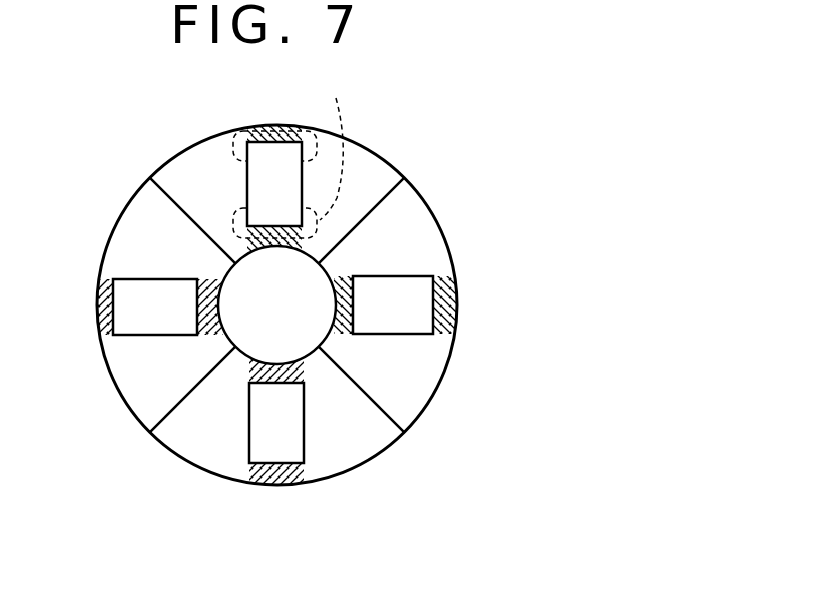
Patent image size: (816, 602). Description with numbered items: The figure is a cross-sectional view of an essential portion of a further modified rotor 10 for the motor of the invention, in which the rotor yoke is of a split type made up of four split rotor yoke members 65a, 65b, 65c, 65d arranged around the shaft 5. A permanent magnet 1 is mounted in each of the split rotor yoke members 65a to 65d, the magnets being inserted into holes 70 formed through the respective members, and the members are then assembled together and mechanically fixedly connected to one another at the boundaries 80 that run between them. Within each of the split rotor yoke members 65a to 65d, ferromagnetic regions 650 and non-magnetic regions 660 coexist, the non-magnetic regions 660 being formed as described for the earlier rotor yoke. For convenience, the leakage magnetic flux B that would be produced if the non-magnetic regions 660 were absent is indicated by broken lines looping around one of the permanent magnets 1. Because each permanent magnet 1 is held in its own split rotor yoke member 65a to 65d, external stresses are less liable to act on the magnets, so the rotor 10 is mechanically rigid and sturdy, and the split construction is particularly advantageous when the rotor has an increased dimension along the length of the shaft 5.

The rotor 10 is at (295, 303).
The permanent magnet 1 is at (423, 290).
The shaft 5 is at (237, 348).
The hole 70 is at (243, 449).
The boundary 80 is at (172, 188).
The ferromagnetic region 650 is at (428, 378).
The non-magnetic region 660 is at (444, 300).
The split rotor yoke member 65a is at (415, 230).
The split rotor yoke member 65b is at (353, 440).
The split rotor yoke member 65c is at (131, 392).
The split rotor yoke member 65d is at (208, 158).
The leakage magnetic flux B is at (314, 140).